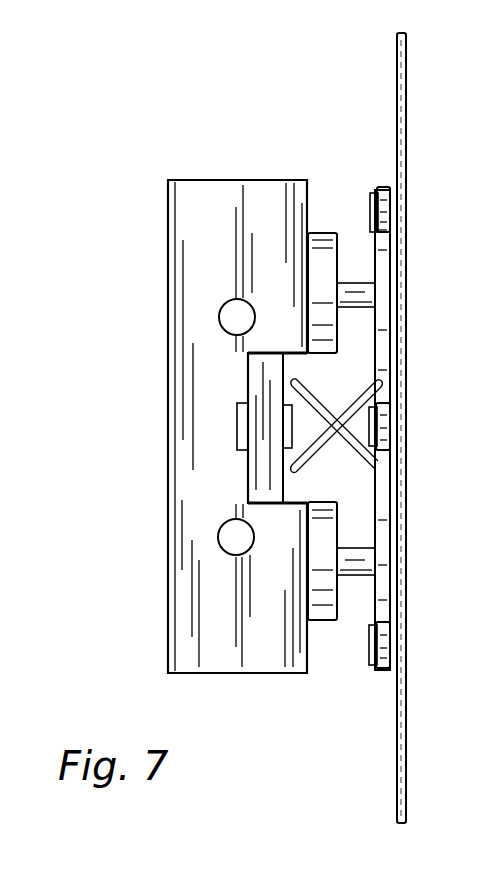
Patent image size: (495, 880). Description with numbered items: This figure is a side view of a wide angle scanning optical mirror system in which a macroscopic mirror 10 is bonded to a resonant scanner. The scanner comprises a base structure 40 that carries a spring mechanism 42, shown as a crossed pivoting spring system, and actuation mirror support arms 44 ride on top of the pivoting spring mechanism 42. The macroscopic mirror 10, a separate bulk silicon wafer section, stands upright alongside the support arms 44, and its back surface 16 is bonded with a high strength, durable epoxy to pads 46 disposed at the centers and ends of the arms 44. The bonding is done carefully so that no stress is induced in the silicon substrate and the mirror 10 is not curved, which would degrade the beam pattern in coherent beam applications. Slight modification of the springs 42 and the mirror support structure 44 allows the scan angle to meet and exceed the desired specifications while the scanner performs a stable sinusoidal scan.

The macroscopic mirror 10 is at (406, 763).
The back surface 16 is at (397, 795).
The base structure 40 is at (178, 628).
The spring mechanism 42 is at (338, 448).
The mirror support arms 44 is at (374, 262).
The pads 46 is at (397, 210).